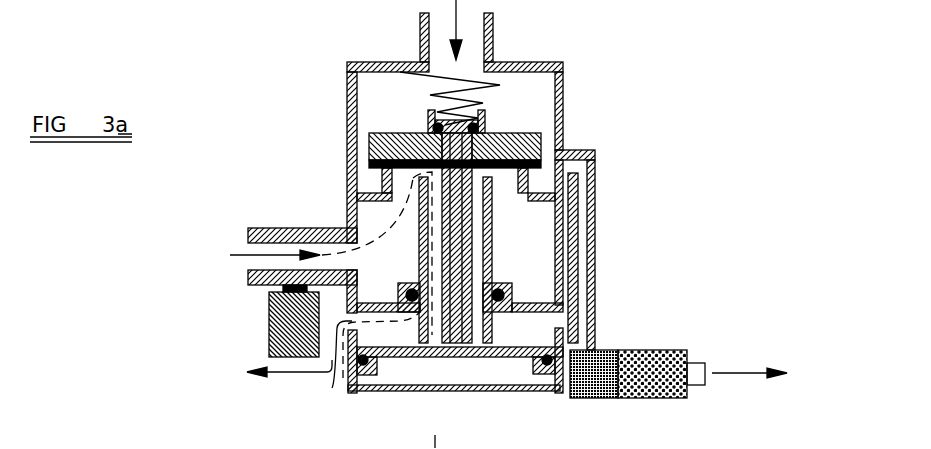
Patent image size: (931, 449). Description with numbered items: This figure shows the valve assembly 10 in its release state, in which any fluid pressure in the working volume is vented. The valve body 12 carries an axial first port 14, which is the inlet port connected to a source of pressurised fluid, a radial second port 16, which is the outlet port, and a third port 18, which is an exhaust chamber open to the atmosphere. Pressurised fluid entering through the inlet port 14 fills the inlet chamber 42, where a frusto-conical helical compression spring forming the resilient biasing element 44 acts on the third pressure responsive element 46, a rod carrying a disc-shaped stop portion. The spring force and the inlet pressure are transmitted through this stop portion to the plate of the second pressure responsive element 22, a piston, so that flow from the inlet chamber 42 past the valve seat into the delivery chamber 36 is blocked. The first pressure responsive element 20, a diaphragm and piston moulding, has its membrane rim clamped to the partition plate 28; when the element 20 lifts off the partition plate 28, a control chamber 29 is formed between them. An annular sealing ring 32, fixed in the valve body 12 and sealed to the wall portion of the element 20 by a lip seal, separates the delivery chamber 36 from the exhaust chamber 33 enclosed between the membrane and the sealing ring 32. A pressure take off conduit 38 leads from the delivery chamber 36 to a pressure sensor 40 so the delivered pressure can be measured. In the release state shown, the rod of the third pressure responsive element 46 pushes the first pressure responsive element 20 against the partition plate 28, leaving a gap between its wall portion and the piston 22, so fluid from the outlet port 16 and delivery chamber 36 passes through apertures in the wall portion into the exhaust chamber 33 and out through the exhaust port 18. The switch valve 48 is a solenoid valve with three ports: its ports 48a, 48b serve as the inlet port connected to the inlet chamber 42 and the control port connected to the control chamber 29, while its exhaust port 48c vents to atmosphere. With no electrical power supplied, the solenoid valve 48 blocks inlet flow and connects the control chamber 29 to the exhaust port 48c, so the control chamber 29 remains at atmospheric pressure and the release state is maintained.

The valve assembly 10 is at (612, 55).
The valve body 12 is at (570, 120).
The inlet port 14 is at (494, 44).
The outlet port 16 is at (303, 228).
The exhaust chamber 18 is at (332, 388).
The first pressure responsive element 20 is at (532, 332).
The second pressure responsive element 22 is at (548, 147).
The partition plate 28 is at (458, 391).
The control chamber 29 is at (489, 368).
The annular sealing ring 32 is at (358, 393).
The exhaust chamber 33 is at (398, 362).
The delivery chamber 36 is at (537, 232).
The pressure take off conduit 38 is at (269, 293).
The pressure sensor 40 is at (269, 300).
The inlet chamber 42 is at (382, 108).
The resilient biasing element 44 is at (497, 80).
The third pressure responsive element 46 is at (462, 157).
The switch valve 48 is at (674, 349).
The filter element 48a is at (580, 337).
The dense filter element 48b is at (562, 396).
The exhaust port 48c is at (705, 367).